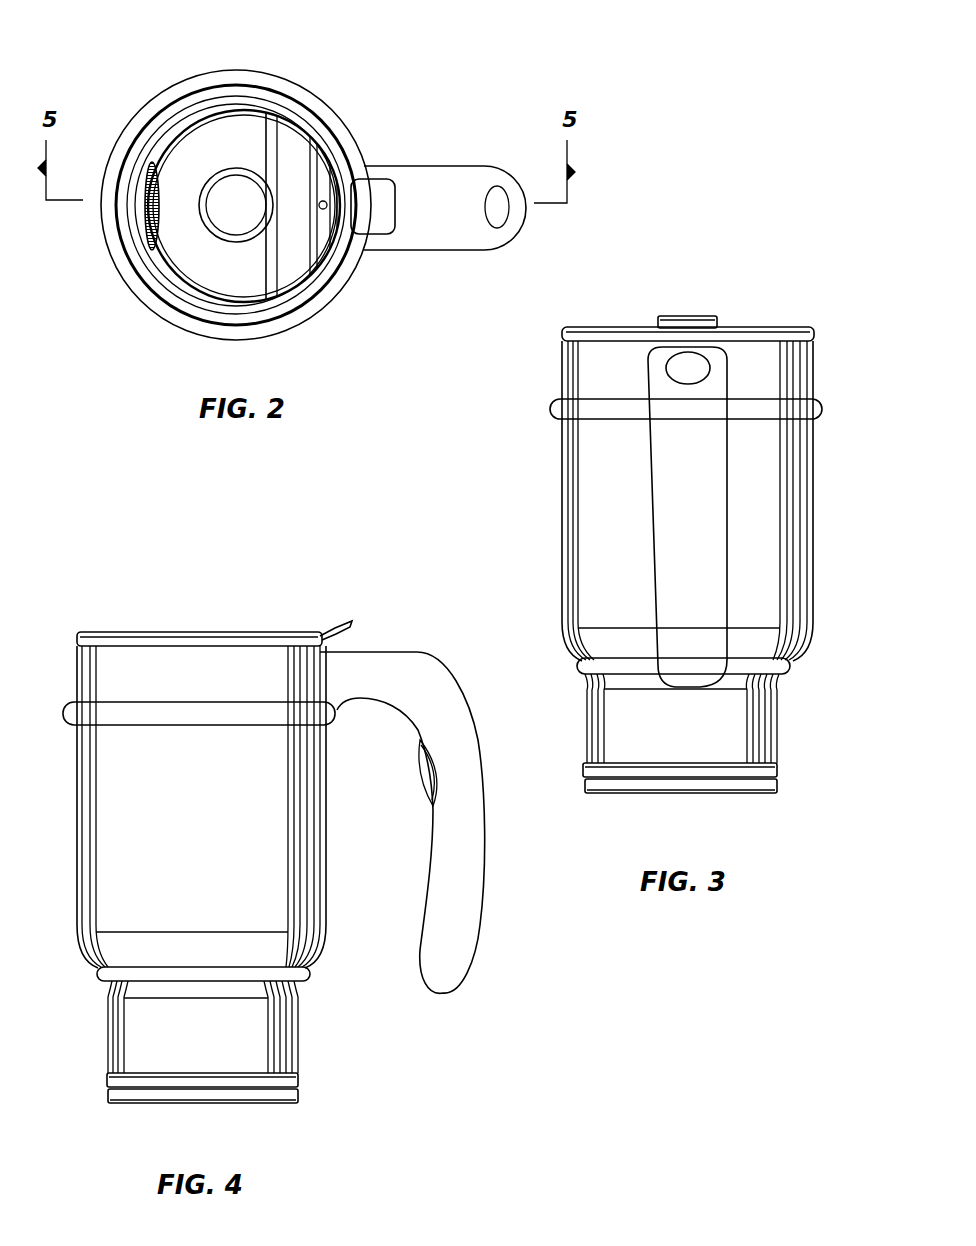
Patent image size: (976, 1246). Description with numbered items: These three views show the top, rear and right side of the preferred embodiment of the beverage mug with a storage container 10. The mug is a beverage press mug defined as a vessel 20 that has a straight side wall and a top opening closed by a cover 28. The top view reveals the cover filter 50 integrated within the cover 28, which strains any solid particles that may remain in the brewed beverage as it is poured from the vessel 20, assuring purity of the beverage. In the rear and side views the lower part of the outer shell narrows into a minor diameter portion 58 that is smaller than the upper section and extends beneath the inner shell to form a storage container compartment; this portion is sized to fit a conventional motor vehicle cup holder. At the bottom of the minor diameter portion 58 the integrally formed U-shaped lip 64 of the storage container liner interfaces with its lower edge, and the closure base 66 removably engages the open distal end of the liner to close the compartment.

In FIG. 2, the beverage mug with a storage container 10 is at (282, 207).
In FIG. 3, the beverage mug with a storage container 10 is at (630, 514).
In FIG. 4, the beverage mug with a storage container 10 is at (256, 837).
In FIG. 2, the vessel 20 is at (174, 321).
In FIG. 3, the vessel 20 is at (558, 500).
In FIG. 4, the vessel 20 is at (322, 925).
In FIG. 2, the cover 28 is at (216, 86).
In FIG. 2, the cover filter 50 is at (147, 219).
In FIG. 3, the minor diameter portion 58 is at (588, 725).
In FIG. 4, the minor diameter portion 58 is at (108, 1042).
In FIG. 3, the U-shaped lip 64 is at (773, 768).
In FIG. 4, the U-shaped lip 64 is at (298, 1080).
In FIG. 3, the closure base 66 is at (617, 787).
In FIG. 4, the closure base 66 is at (135, 1105).